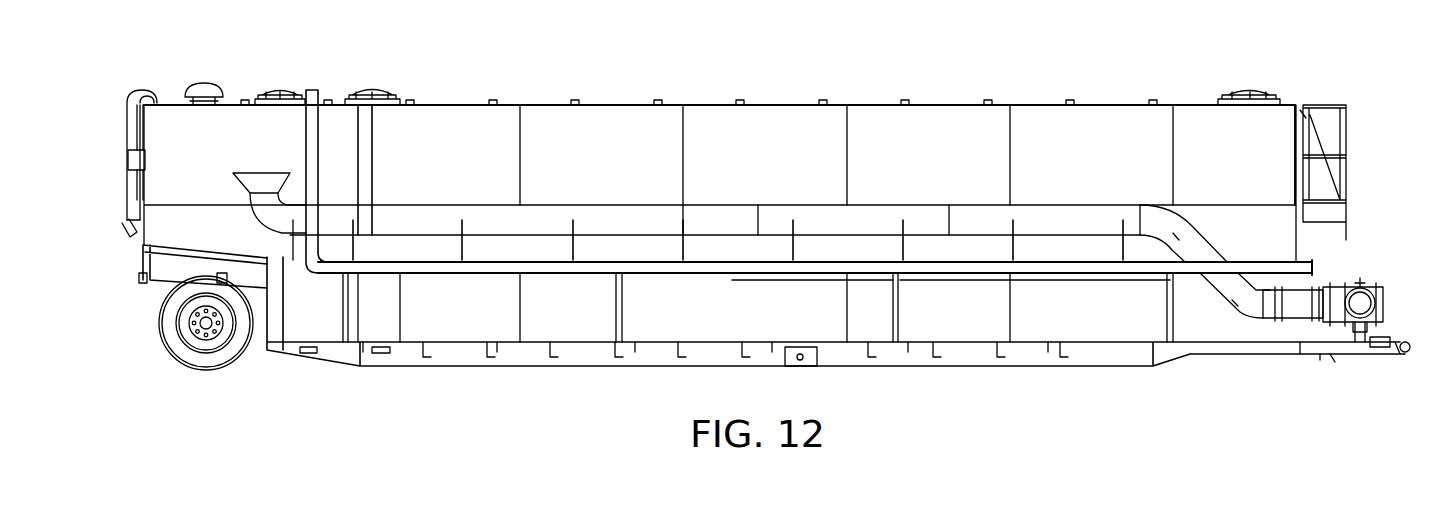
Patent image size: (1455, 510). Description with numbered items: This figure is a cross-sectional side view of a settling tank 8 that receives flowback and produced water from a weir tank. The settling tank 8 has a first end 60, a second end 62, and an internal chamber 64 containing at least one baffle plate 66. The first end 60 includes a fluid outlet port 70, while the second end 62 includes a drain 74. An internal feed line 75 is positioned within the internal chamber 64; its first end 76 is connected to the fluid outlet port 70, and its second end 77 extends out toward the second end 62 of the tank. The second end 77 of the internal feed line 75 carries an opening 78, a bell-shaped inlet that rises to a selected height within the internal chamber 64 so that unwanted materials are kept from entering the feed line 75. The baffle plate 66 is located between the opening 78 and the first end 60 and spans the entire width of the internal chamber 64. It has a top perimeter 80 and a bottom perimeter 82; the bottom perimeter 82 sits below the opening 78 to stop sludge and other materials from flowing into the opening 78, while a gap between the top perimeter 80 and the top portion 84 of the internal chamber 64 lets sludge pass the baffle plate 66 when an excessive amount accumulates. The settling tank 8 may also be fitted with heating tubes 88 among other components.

The settling tank 8 is at (1187, 72).
The first end 60 is at (1347, 163).
The second end 62 is at (132, 163).
The internal chamber 64 is at (778, 169).
The baffle plate 66 is at (372, 158).
The fluid outlet port 70 is at (1383, 300).
The drain 74 is at (145, 166).
The internal feed line 75 is at (597, 220).
The first end 76 is at (1318, 300).
The second end 77 is at (227, 190).
The opening 78 is at (267, 178).
The top perimeter 80 is at (368, 123).
The bottom perimeter 82 is at (370, 193).
The top portion 84 is at (895, 108).
The heating tubes 88 is at (973, 271).